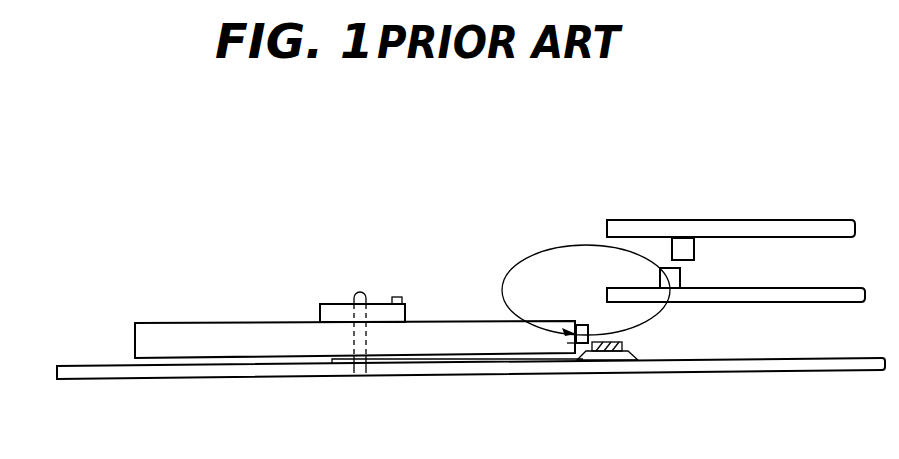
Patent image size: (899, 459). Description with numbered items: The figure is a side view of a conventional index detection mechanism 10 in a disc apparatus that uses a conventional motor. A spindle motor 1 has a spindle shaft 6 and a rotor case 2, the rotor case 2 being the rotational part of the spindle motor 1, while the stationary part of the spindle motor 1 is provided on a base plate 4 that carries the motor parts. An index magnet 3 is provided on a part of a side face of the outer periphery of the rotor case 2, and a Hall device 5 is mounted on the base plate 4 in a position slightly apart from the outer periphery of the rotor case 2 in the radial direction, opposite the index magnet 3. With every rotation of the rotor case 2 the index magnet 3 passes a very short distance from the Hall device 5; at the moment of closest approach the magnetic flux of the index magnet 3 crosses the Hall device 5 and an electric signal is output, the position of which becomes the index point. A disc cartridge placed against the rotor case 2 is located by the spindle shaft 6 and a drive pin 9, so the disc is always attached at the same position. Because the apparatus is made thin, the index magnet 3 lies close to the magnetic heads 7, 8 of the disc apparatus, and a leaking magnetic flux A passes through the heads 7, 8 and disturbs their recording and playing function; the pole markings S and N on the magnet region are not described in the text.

The spindle motor 1 is at (249, 312).
The rotor case 2 is at (135, 337).
The index magnet 3 is at (577, 323).
The base plate 4 is at (757, 367).
The Hall device 5 is at (620, 343).
The spindle shaft 6 is at (361, 290).
The head 7 is at (680, 274).
The head 8 is at (694, 248).
The drive pin 9 is at (398, 297).
The index detection mechanism 10 is at (641, 366).
The leaking magnetic flux A is at (589, 246).
The gap S is at (567, 343).
The yoke N is at (608, 350).